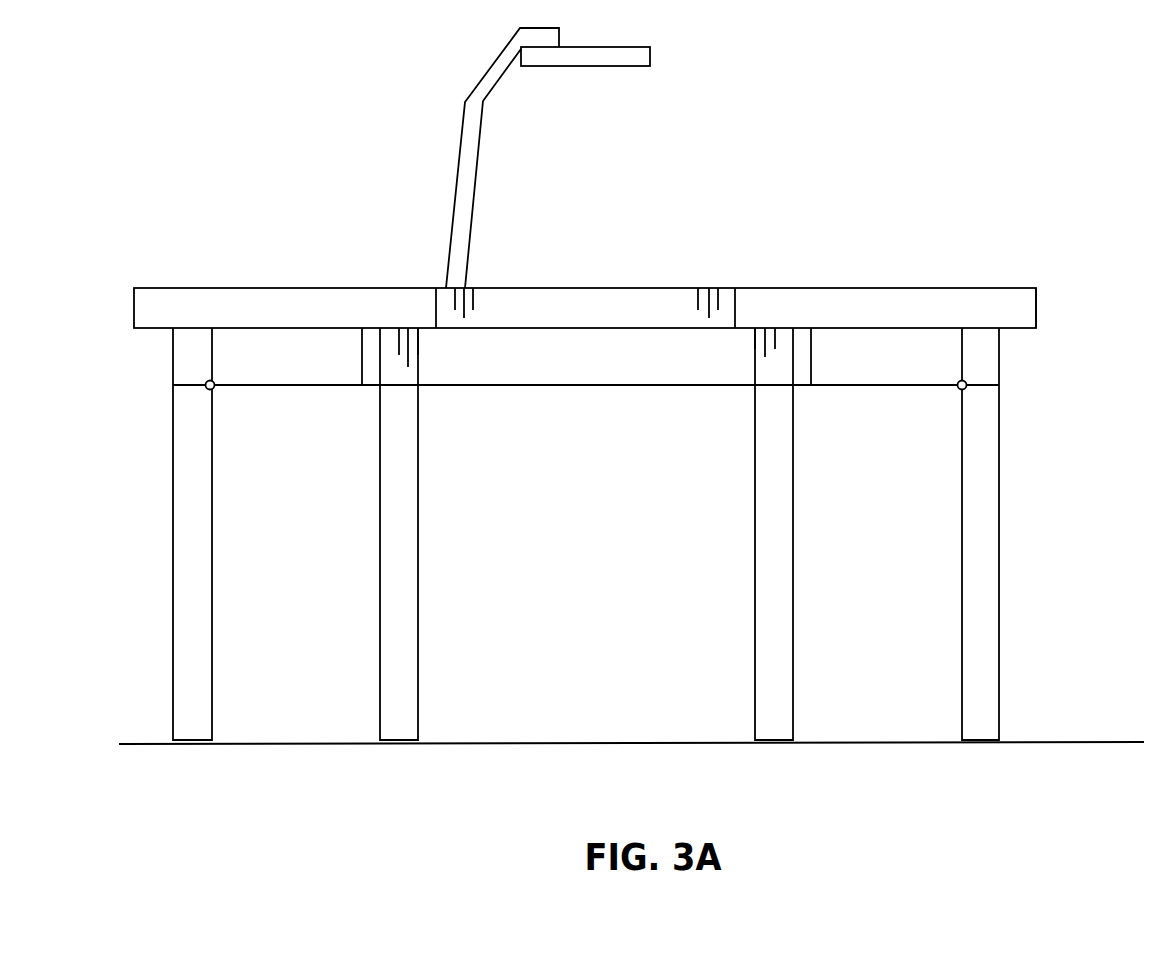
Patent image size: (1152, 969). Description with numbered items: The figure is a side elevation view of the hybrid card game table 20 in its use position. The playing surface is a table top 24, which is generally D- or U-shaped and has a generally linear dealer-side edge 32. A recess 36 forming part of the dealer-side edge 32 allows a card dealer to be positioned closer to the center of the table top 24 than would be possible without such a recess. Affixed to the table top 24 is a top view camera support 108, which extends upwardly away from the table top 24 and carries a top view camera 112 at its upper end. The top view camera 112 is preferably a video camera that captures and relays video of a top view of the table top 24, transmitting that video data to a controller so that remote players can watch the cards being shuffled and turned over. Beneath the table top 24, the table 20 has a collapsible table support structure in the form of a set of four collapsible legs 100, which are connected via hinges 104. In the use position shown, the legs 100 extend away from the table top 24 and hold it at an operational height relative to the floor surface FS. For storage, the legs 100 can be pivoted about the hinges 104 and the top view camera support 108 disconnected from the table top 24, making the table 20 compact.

The table 20 is at (275, 180).
The table top 24 is at (1018, 290).
The dealer-side edge 32 is at (1020, 309).
The recess 36 is at (668, 304).
The collapsible legs 100 is at (212, 542).
The hinges 104 is at (213, 388).
The top view camera support 108 is at (477, 133).
The top view camera 112 is at (650, 50).
The floor surface FS is at (1083, 740).